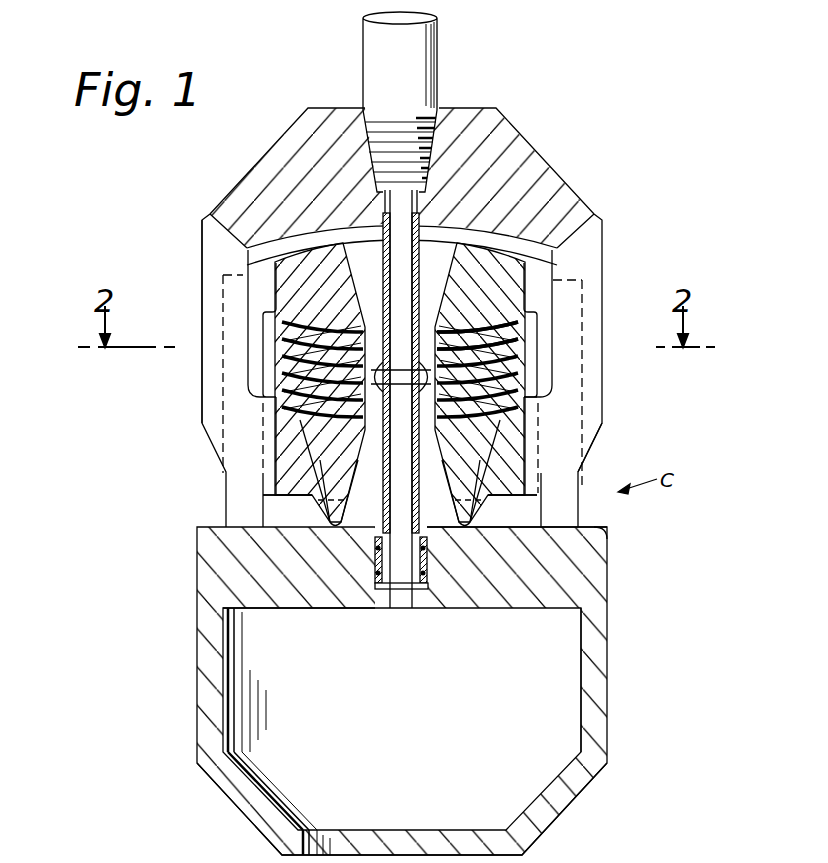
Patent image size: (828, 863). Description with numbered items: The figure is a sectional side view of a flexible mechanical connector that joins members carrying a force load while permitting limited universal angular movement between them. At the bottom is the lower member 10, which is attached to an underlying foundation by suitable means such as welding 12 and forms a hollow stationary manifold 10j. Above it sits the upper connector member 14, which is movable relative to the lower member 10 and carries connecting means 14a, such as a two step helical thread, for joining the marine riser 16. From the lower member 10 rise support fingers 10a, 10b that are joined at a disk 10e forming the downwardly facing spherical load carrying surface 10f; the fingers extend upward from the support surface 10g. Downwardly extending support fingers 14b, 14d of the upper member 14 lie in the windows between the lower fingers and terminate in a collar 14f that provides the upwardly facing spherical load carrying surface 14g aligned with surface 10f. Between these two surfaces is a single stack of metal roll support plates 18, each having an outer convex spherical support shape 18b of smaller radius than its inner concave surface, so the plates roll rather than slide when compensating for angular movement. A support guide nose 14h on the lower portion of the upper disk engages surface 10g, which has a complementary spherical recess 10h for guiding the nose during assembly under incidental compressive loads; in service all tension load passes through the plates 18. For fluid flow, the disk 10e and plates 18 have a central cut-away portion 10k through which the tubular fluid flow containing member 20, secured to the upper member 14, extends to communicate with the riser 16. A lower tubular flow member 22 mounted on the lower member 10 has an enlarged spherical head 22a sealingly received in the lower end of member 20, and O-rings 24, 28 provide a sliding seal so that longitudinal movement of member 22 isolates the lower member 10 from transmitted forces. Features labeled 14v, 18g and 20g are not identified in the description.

The lower member 10 is at (606, 634).
The support finger 10a is at (312, 495).
The support finger 10b is at (579, 481).
The disk or circular portion 10e is at (300, 257).
The downwardly facing spherical load carrying surface 10f is at (270, 326).
The support surface 10g is at (598, 522).
The spherical shaped recess 10h is at (604, 550).
The hollow stationary manifold 10j is at (583, 675).
The central cut-away portion 10k is at (388, 604).
The welding 12 is at (230, 800).
The upper connector member 14 is at (490, 124).
The connecting means 14a is at (372, 122).
The support finger 14b is at (202, 410).
The support finger 14d is at (587, 264).
The disk or collar 14f is at (293, 446).
The upwardly facing spherical load carrying surface 14g is at (265, 383).
The support guide nose 14h is at (372, 547).
The cap hook 14v is at (318, 500).
The marine riser 16 is at (377, 43).
The roll support plates 18 is at (528, 357).
The outer convex spherical support shape 18b is at (456, 340).
The spring end coil 18g is at (468, 298).
The tubular fluid flow containing member 20 is at (382, 220).
The contact tube collar 20g is at (432, 364).
The tubular fluid flow containing member 22 is at (425, 555).
The spherical head or ball 22a is at (527, 405).
The O-ring 24 is at (373, 547).
The O-ring 28 is at (376, 573).